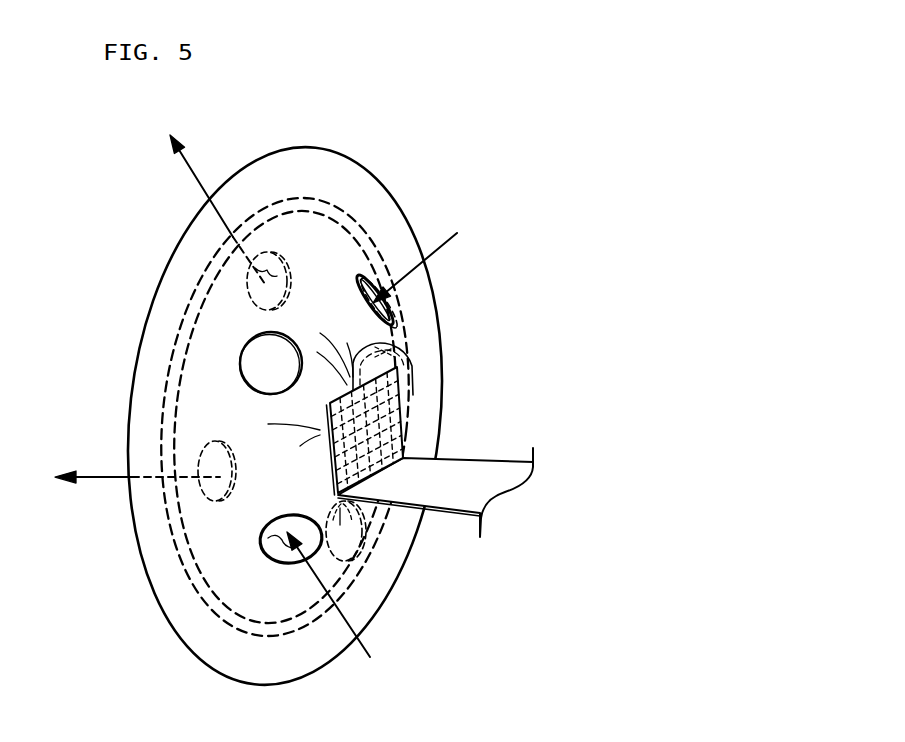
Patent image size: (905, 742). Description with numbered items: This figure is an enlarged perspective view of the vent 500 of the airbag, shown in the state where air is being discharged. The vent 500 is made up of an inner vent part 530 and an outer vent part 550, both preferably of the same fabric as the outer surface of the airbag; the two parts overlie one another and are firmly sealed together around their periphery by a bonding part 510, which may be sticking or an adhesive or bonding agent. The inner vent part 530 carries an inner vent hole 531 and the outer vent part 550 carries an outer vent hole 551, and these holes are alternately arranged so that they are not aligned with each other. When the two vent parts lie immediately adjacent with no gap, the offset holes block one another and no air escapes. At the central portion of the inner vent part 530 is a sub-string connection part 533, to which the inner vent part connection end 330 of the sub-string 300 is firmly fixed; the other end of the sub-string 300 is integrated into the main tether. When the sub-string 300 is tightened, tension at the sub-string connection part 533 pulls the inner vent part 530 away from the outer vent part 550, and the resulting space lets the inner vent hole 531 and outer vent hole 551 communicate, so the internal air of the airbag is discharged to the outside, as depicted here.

The sub-string 300 is at (490, 455).
The inner vent part connection end 330 is at (397, 417).
The vent 500 is at (160, 258).
The bonding part 510 is at (168, 382).
The inner vent part 530 is at (218, 519).
The inner vent hole 531 is at (273, 547).
The sub-string connection part 533 is at (400, 347).
The outer vent part 550 is at (320, 256).
The outer vent hole 551 is at (284, 258).